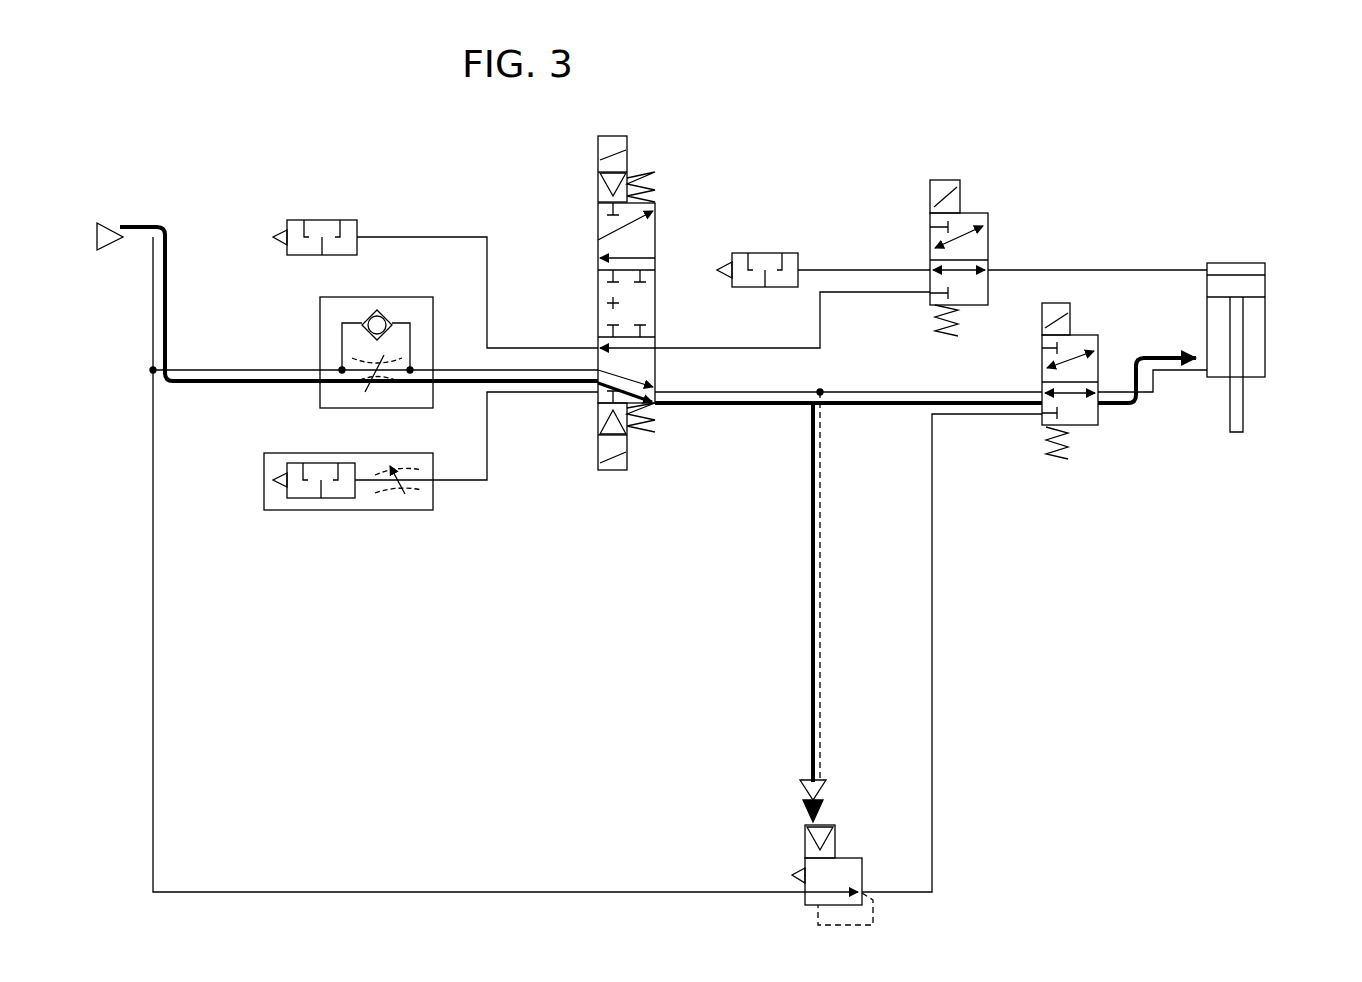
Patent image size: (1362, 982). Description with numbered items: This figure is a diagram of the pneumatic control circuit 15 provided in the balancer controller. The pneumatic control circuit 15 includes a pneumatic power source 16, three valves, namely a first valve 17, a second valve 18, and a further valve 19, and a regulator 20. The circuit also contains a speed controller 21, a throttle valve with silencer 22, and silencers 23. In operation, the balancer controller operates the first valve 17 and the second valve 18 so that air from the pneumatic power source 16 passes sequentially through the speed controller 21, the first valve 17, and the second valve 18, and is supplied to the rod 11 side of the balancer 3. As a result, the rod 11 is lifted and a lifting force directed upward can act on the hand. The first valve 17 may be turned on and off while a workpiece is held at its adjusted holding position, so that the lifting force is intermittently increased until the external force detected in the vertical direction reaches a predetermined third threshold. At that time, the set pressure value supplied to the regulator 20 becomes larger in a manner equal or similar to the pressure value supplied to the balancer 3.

The balancer 3 is at (1267, 323).
The rod 11 is at (1245, 403).
The pneumatic control circuit 15 is at (400, 124).
The pneumatic power source 16 is at (110, 222).
The first valve 17 is at (660, 146).
The second valve 18 is at (1036, 363).
The valve 19 is at (990, 182).
The regulator 20 is at (848, 858).
The speed controller 21 is at (318, 325).
The throttle valve with silencer 22 is at (350, 512).
The silencer 23 is at (321, 220).